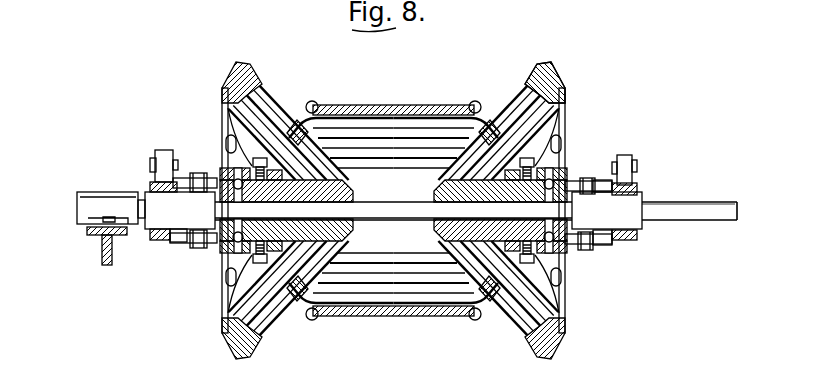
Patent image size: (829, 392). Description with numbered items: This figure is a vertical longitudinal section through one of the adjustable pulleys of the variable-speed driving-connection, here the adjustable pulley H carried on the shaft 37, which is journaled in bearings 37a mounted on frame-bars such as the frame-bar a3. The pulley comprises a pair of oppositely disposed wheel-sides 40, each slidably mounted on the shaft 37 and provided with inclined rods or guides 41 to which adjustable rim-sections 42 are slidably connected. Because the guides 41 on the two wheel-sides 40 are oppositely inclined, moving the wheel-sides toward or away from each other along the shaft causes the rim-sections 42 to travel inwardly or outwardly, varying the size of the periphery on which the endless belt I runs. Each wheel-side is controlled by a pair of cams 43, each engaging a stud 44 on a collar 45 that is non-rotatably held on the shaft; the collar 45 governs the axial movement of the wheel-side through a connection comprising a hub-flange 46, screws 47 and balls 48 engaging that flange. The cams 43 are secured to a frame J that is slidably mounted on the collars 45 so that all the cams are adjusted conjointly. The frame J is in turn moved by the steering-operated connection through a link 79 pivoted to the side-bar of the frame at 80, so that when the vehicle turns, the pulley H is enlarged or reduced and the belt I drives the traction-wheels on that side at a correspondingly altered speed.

The shaft 37 is at (721, 216).
The bearing 37a is at (85, 200).
The frame-bar a3 is at (103, 248).
The wheel-side 40 is at (219, 330).
The inclined rod or guide 41 is at (268, 94).
The rim-section 42 is at (358, 118).
The cam 43 is at (180, 183).
The stud 44 is at (205, 176).
The collar 45 is at (155, 215).
The hub-flange 46 is at (228, 268).
The screw 47 is at (258, 266).
The ball 48 is at (222, 172).
The link 79 is at (171, 150).
The pivot 80 is at (152, 170).
The adjustable pulley H is at (558, 80).
The endless belt I is at (424, 105).
The frame J is at (158, 245).